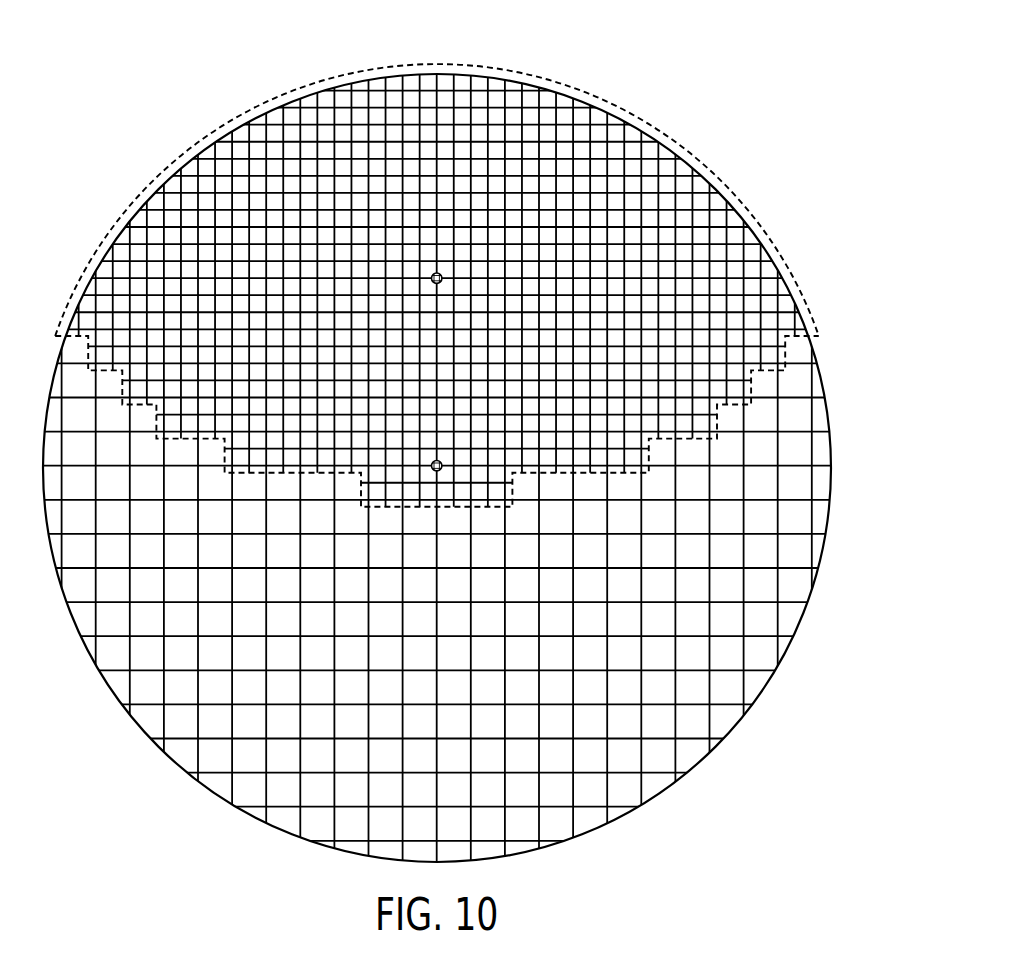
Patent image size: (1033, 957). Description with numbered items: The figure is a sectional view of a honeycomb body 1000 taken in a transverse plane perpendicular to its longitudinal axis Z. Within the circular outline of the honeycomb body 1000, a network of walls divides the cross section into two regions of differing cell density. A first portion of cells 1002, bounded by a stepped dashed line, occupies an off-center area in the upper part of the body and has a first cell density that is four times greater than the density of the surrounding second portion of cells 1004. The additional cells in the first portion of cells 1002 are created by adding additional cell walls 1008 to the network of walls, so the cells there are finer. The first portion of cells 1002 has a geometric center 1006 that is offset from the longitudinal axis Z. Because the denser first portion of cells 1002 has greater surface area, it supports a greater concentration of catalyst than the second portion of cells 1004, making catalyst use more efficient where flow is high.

The honeycomb body 1000 is at (455, 444).
The first portion of cells 1002 is at (727, 173).
The second portion of cells 1004 is at (658, 722).
The geometric center 1006 is at (437, 273).
The additional cell walls 1008 is at (765, 345).
The longitudinal axis Z is at (442, 466).